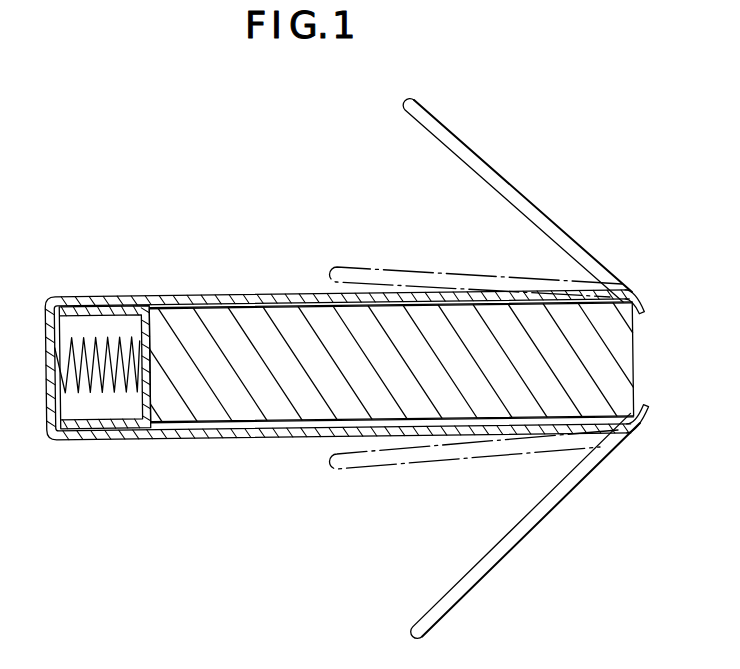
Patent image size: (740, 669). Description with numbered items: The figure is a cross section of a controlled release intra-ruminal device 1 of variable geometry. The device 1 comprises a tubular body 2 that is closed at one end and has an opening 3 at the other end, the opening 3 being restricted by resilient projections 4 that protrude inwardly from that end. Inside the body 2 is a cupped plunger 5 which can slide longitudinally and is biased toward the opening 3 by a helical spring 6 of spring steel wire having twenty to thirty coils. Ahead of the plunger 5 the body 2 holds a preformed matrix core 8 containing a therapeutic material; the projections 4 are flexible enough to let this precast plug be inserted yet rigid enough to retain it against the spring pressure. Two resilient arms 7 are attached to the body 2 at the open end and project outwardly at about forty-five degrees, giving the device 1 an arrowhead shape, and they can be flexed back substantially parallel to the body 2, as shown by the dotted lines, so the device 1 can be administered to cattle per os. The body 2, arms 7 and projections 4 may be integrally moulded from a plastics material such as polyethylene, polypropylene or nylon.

The device 1 is at (104, 282).
The tubular body 2 is at (177, 437).
The opening 3 is at (655, 365).
The resilient projections 4 is at (643, 304).
The cupped plunger 5 is at (153, 317).
The helical spring 6 is at (67, 396).
The resilient arms 7 is at (488, 174).
The preformed matrix core 8 is at (250, 308).